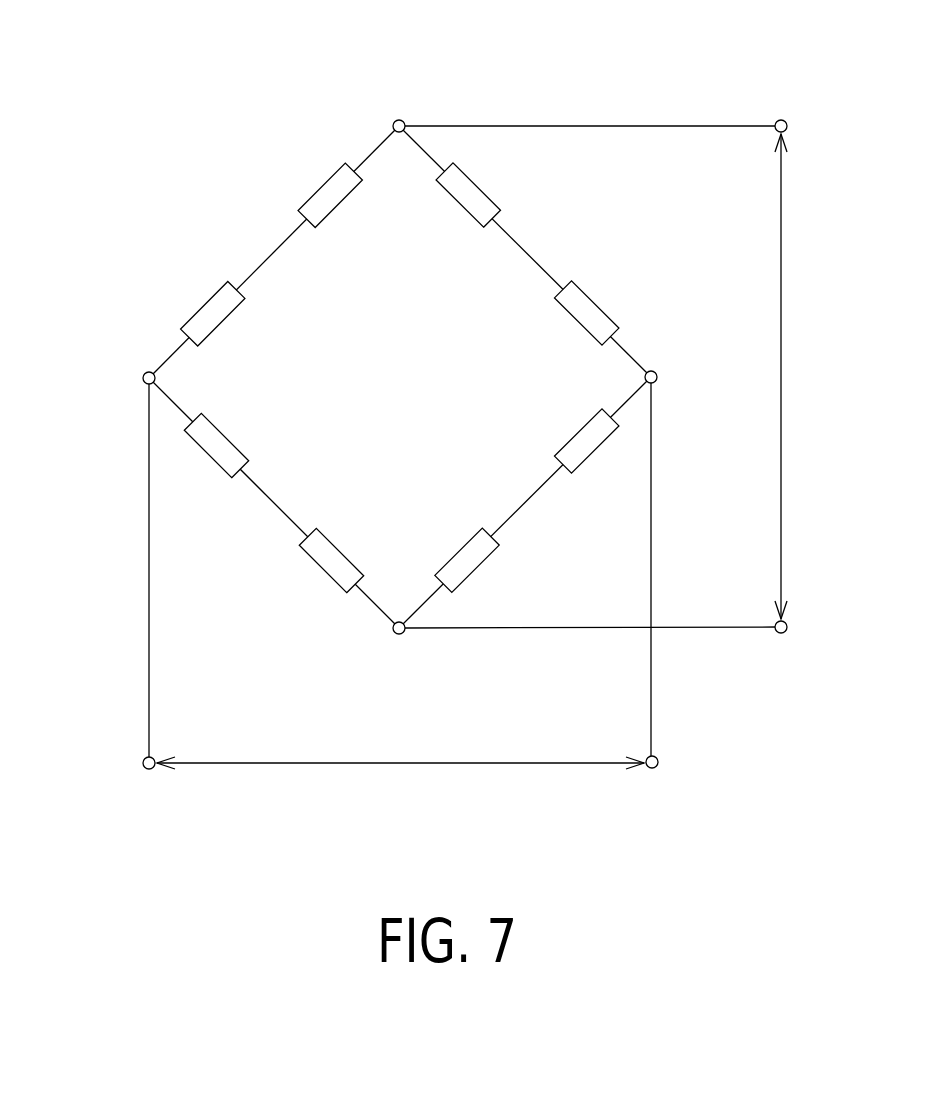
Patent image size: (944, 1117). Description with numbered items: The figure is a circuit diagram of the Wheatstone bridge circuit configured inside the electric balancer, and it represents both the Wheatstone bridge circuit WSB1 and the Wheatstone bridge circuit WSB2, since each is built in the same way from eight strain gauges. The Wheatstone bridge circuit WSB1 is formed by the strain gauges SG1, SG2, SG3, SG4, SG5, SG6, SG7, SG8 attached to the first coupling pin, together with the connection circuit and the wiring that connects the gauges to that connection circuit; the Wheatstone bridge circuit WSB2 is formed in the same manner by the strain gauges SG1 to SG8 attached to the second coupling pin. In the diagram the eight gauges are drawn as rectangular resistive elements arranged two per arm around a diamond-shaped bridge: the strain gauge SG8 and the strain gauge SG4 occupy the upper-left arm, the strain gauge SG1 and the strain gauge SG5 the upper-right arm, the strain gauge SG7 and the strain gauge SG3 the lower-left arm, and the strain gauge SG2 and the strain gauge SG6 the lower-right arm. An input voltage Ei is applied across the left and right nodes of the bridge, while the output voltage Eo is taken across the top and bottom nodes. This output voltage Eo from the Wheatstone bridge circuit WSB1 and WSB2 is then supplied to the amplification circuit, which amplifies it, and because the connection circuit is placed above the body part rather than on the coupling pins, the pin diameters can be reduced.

The Wheatstone bridge circuit WSB1 is at (411, 391).
The Wheatstone bridge circuit WSB2 is at (451, 391).
The strain gauge SG1 is at (480, 183).
The strain gauge SG2 is at (600, 457).
The strain gauge SG3 is at (318, 565).
The strain gauge SG4 is at (198, 307).
The strain gauge SG5 is at (597, 300).
The strain gauge SG6 is at (485, 563).
The strain gauge SG7 is at (202, 453).
The strain gauge SG8 is at (320, 183).
The output voltage Eo is at (781, 418).
The input voltage Ei is at (393, 763).